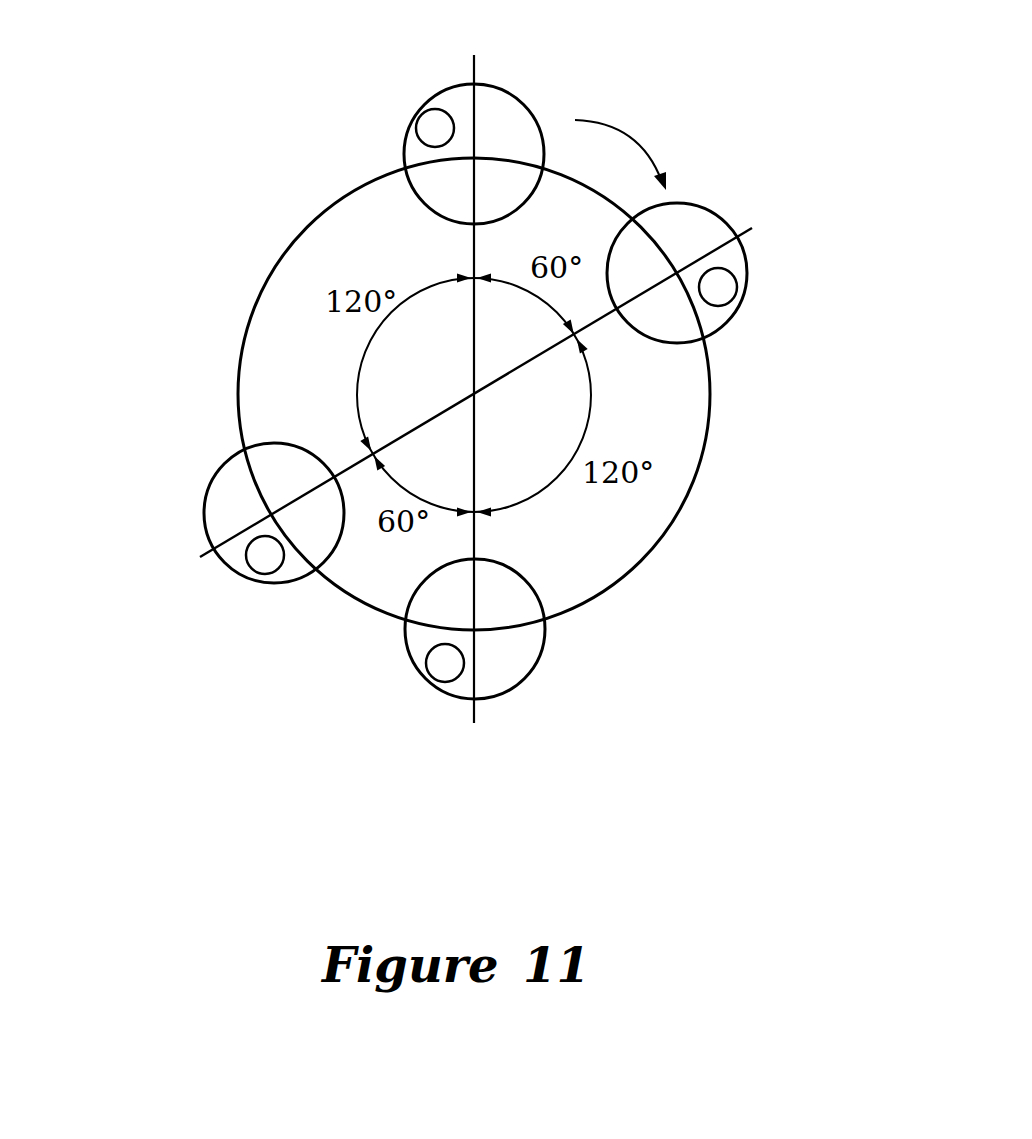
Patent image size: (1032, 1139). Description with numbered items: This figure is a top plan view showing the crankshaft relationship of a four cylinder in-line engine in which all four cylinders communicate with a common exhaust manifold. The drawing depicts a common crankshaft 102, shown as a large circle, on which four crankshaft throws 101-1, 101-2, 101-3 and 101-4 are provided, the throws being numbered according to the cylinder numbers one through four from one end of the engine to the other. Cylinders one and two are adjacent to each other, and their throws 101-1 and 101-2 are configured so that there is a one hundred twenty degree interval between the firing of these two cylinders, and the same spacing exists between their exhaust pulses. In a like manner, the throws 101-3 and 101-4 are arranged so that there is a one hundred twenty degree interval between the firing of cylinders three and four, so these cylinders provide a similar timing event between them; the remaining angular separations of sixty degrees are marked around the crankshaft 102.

The crankshaft 102 is at (232, 263).
The crankshaft throw 101-1 is at (405, 130).
The crankshaft throw 101-2 is at (204, 505).
The crankshaft throw 101-3 is at (410, 652).
The crankshaft throw 101-4 is at (732, 320).